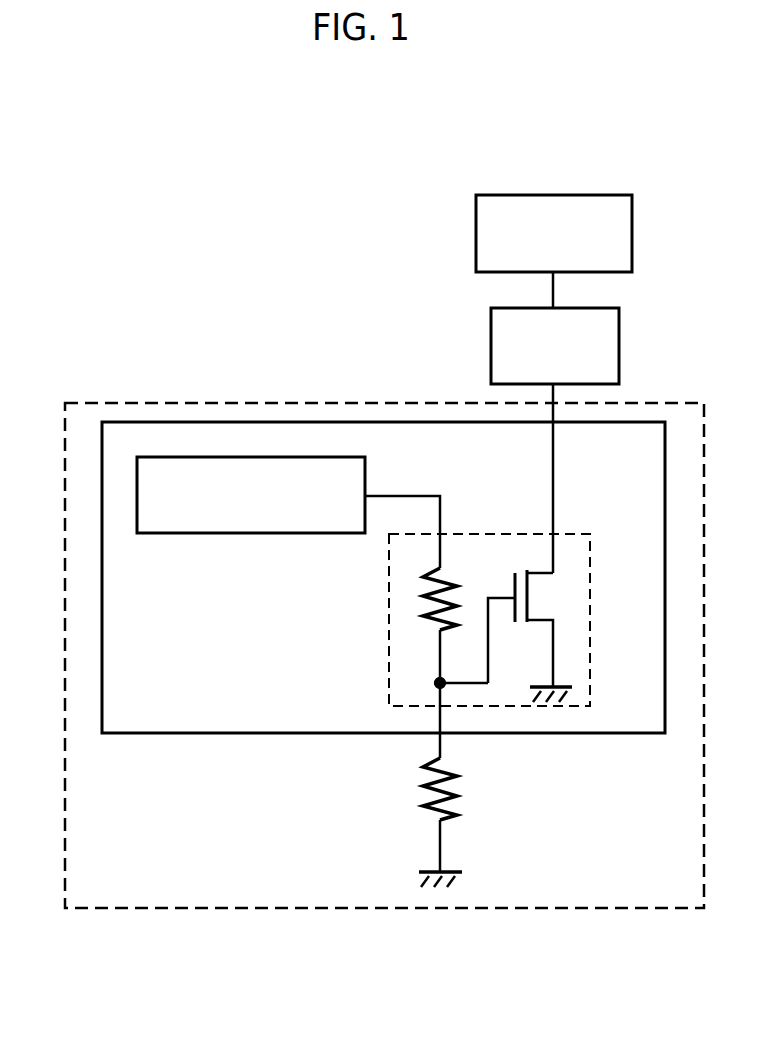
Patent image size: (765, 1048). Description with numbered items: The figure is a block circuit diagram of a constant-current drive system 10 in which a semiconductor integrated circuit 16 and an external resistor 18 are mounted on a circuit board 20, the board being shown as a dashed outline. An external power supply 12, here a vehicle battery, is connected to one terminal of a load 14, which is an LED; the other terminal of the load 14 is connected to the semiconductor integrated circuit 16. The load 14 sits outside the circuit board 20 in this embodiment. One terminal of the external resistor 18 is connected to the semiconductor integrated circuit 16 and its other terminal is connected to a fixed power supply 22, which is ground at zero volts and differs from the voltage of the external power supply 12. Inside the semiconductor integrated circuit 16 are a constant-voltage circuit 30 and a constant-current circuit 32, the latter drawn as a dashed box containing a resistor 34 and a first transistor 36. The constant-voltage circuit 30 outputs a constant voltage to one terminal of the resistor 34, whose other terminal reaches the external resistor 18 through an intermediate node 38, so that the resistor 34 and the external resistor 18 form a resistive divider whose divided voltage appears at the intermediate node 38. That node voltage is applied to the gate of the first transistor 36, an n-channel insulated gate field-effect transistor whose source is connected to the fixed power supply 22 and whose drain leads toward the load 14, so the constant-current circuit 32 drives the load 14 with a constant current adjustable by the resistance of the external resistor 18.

The constant-current drive system 10 is at (326, 300).
The external power supply 12 is at (633, 223).
The load 14 is at (619, 335).
The semiconductor integrated circuit 16 is at (183, 421).
The external resistor 18 is at (455, 790).
The circuit board 20 is at (349, 403).
The fixed power supply 22 is at (565, 697).
The constant-voltage circuit 30 is at (216, 534).
The constant-current circuit 32 is at (482, 534).
The resistor 34 is at (428, 603).
The first transistor 36 is at (548, 598).
The intermediate node 38 is at (436, 682).